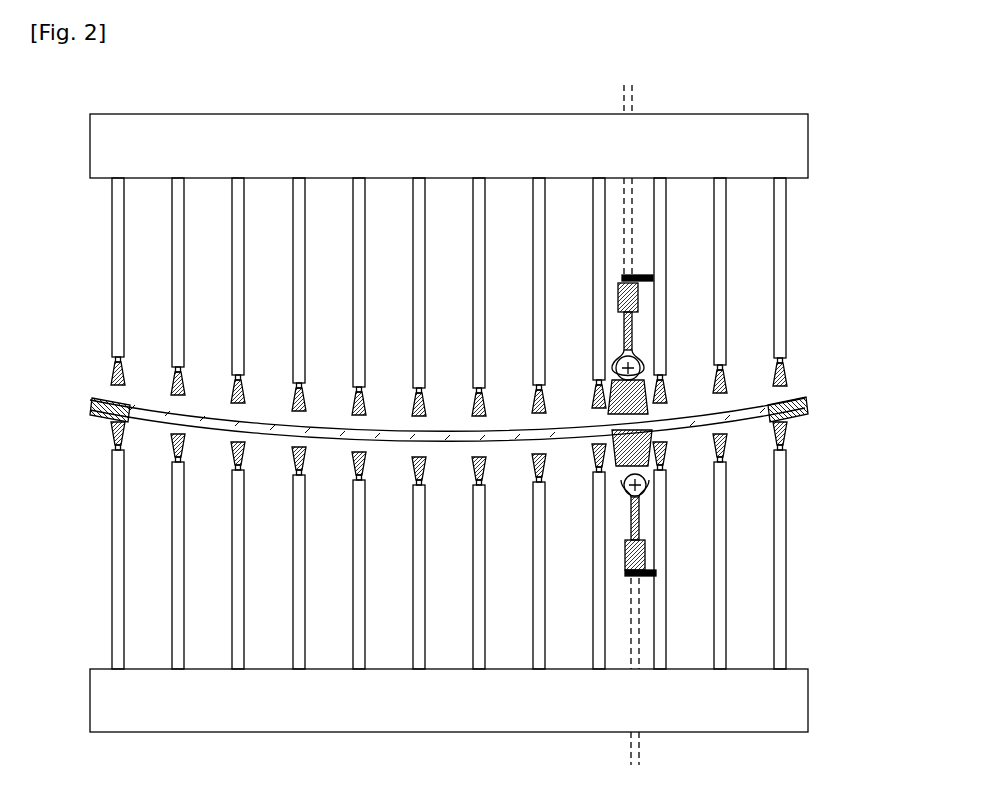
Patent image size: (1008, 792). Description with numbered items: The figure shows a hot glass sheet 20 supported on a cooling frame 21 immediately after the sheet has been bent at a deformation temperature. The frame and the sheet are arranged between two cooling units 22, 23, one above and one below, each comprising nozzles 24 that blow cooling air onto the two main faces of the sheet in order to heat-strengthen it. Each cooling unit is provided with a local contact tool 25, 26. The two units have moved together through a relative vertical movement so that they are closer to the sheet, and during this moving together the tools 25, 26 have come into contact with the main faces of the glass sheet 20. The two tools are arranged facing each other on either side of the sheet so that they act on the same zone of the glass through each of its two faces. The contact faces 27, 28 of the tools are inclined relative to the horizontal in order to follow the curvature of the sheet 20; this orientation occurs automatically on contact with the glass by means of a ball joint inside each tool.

The hot glass sheet 20 is at (792, 398).
The cooling frame 21 is at (104, 421).
The cooling unit 22 is at (493, 361).
The cooling unit 23 is at (820, 554).
The nozzles 24 is at (534, 207).
The local contact tool 25 is at (660, 400).
The local contact tool 26 is at (664, 452).
The contact face 27 is at (610, 380).
The contact face 28 is at (605, 450).